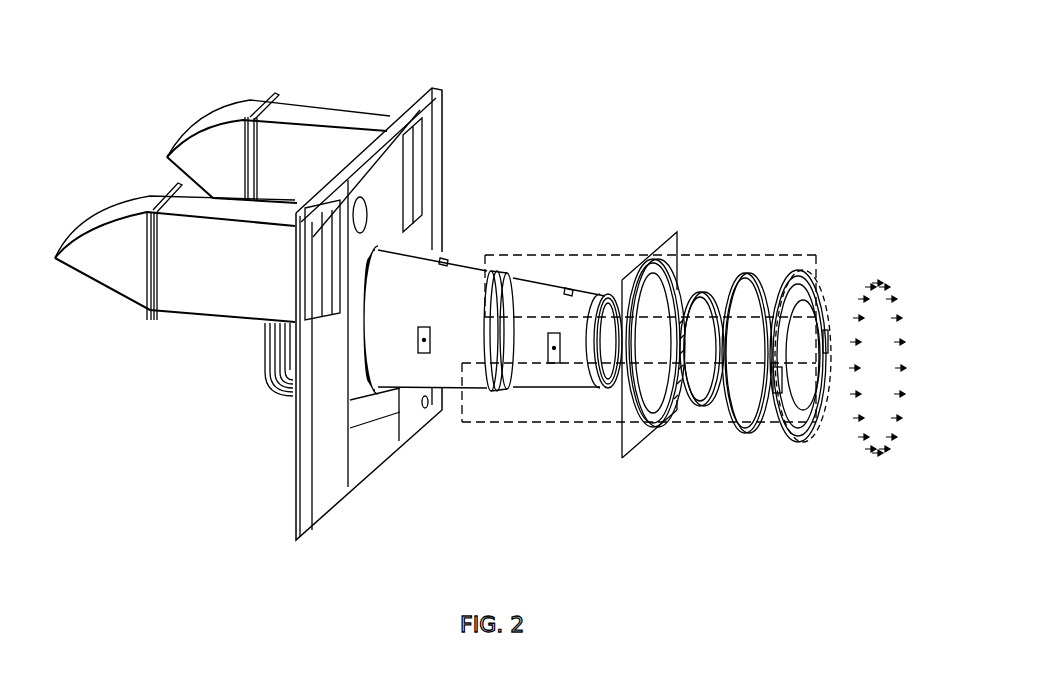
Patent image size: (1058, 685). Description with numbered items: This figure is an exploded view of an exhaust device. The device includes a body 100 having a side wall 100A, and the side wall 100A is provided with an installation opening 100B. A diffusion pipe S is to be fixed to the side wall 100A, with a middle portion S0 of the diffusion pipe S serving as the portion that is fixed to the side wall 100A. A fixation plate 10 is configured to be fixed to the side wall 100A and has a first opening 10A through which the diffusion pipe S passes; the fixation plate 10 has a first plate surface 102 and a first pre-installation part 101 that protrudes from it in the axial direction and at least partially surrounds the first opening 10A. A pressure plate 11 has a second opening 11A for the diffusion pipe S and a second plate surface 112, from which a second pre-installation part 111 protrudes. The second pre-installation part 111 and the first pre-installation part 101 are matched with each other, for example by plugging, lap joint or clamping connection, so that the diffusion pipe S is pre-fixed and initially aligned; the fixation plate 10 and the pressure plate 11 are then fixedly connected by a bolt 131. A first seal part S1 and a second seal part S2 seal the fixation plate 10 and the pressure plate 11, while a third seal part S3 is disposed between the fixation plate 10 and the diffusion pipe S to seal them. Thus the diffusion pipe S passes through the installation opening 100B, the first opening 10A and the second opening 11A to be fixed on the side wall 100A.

The body 100 is at (259, 209).
The side wall 100A is at (387, 160).
The installation opening 100B is at (383, 240).
The diffusion pipe S is at (473, 285).
The middle portion S0 is at (518, 283).
The fixation plate 10 is at (672, 228).
The first opening 10A is at (658, 297).
The first pre-installation part 101 is at (647, 277).
The first plate surface 102 is at (626, 432).
The third seal part S3 is at (690, 407).
The first seal part S1 is at (730, 416).
The second seal part S2 is at (744, 430).
The pressure plate 11 is at (805, 265).
The second opening 11A is at (800, 347).
The second pre-installation part 111 is at (795, 400).
The second plate surface 112 is at (786, 420).
The bolt 131 is at (880, 425).